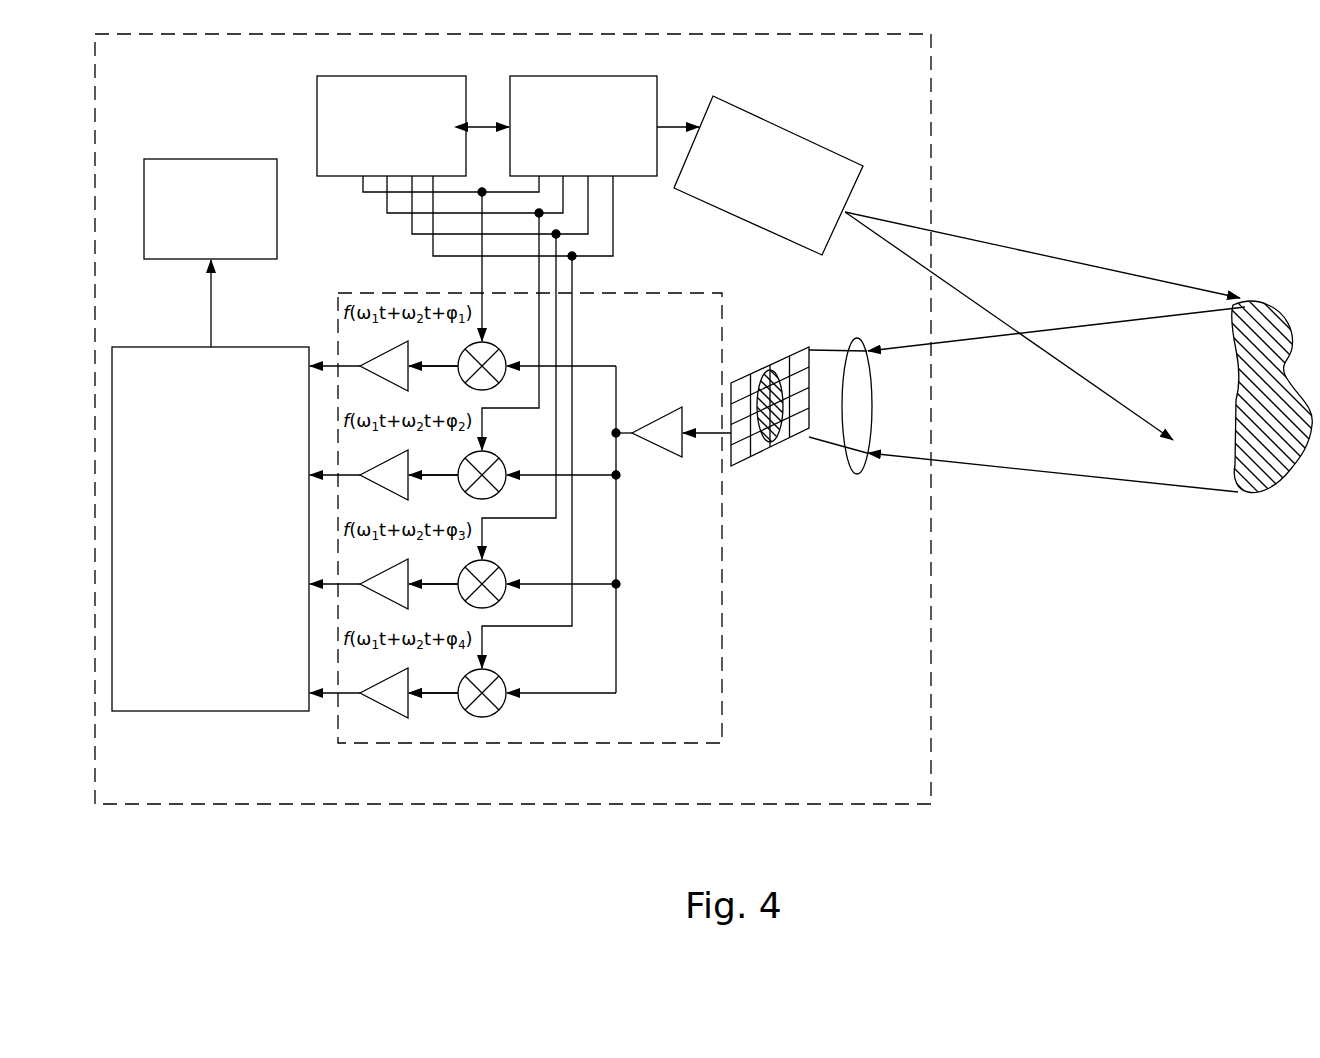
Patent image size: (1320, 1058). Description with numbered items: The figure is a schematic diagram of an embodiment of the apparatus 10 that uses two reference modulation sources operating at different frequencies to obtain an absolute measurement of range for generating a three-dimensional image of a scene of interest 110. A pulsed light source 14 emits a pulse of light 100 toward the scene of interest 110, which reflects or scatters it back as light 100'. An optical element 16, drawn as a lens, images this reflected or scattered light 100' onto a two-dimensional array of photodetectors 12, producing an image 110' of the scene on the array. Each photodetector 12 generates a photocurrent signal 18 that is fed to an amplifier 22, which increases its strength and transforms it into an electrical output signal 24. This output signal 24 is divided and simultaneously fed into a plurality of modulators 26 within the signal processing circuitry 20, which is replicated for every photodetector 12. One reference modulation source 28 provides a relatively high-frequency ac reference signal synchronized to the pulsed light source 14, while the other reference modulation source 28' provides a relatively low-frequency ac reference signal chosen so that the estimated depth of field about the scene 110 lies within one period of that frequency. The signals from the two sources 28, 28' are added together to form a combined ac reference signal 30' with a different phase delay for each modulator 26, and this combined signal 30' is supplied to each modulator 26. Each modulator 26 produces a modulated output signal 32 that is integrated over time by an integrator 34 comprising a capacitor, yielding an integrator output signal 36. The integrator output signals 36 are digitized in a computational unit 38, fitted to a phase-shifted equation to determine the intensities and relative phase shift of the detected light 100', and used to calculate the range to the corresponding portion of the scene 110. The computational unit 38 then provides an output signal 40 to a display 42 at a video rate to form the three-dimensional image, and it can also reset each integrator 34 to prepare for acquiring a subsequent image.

The apparatus 10 is at (962, 722).
The photodetectors 12 is at (742, 466).
The pulsed light source 14 is at (768, 175).
The optical element 16 is at (856, 474).
The photocurrent signal 18 is at (711, 438).
The signal processing circuitry 20 is at (674, 744).
The amplifier 22 is at (661, 420).
The electrical output signal 24 is at (632, 438).
The modulators 26 is at (499, 350).
The reference modulation source 28 is at (583, 106).
The second reference modulation source 28' is at (391, 106).
The combined ac reference signal 30' is at (488, 422).
The modulated output signal 32 is at (448, 697).
The integrator 34 is at (379, 701).
The integrator output signal 36 is at (323, 701).
The computational unit 38 is at (210, 529).
The output signal 40 is at (209, 311).
The display 42 is at (210, 209).
The pulse of light 100 is at (1042, 318).
The reflected or scattered light 100' is at (1056, 399).
The scene of interest 110 is at (1175, 413).
The image of the scene 110' is at (762, 397).